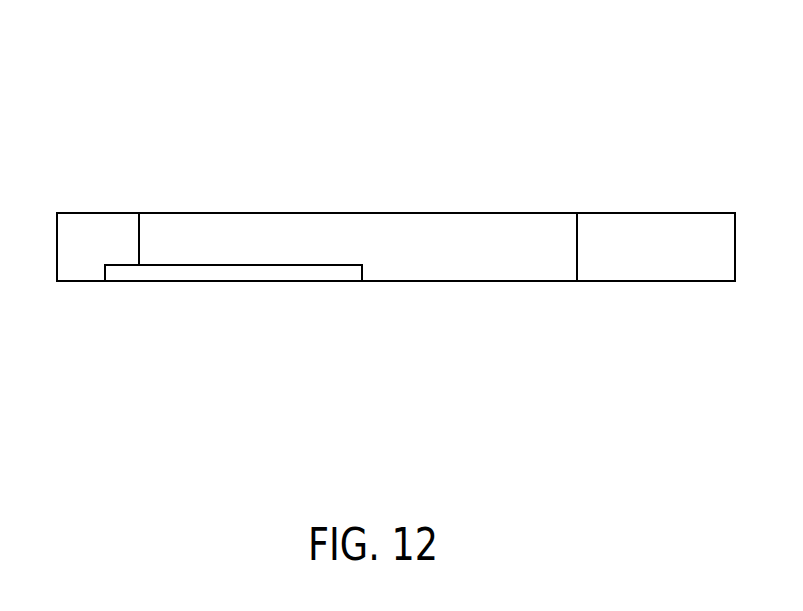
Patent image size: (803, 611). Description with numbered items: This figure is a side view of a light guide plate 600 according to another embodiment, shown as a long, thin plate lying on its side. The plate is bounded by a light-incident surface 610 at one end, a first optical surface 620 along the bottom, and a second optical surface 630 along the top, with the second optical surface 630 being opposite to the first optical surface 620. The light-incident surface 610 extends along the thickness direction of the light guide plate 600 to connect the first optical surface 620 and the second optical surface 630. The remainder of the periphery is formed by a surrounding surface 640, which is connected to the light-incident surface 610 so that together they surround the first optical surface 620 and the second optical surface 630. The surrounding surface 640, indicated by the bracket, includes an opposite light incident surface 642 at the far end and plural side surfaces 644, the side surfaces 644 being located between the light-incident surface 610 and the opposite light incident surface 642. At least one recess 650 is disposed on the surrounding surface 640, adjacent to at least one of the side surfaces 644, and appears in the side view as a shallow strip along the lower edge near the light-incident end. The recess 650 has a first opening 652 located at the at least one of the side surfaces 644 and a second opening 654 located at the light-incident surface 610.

The light guide plate 600 is at (62, 52).
The light-incident surface 610 is at (92, 240).
The first optical surface 620 is at (443, 282).
The second optical surface 630 is at (222, 213).
The surrounding surface 640 is at (675, 112).
The opposite light incident surface 642 is at (736, 230).
The side surfaces 644 is at (462, 218).
The recess 650 is at (325, 273).
The first opening 652 is at (206, 282).
The second opening 654 is at (104, 278).